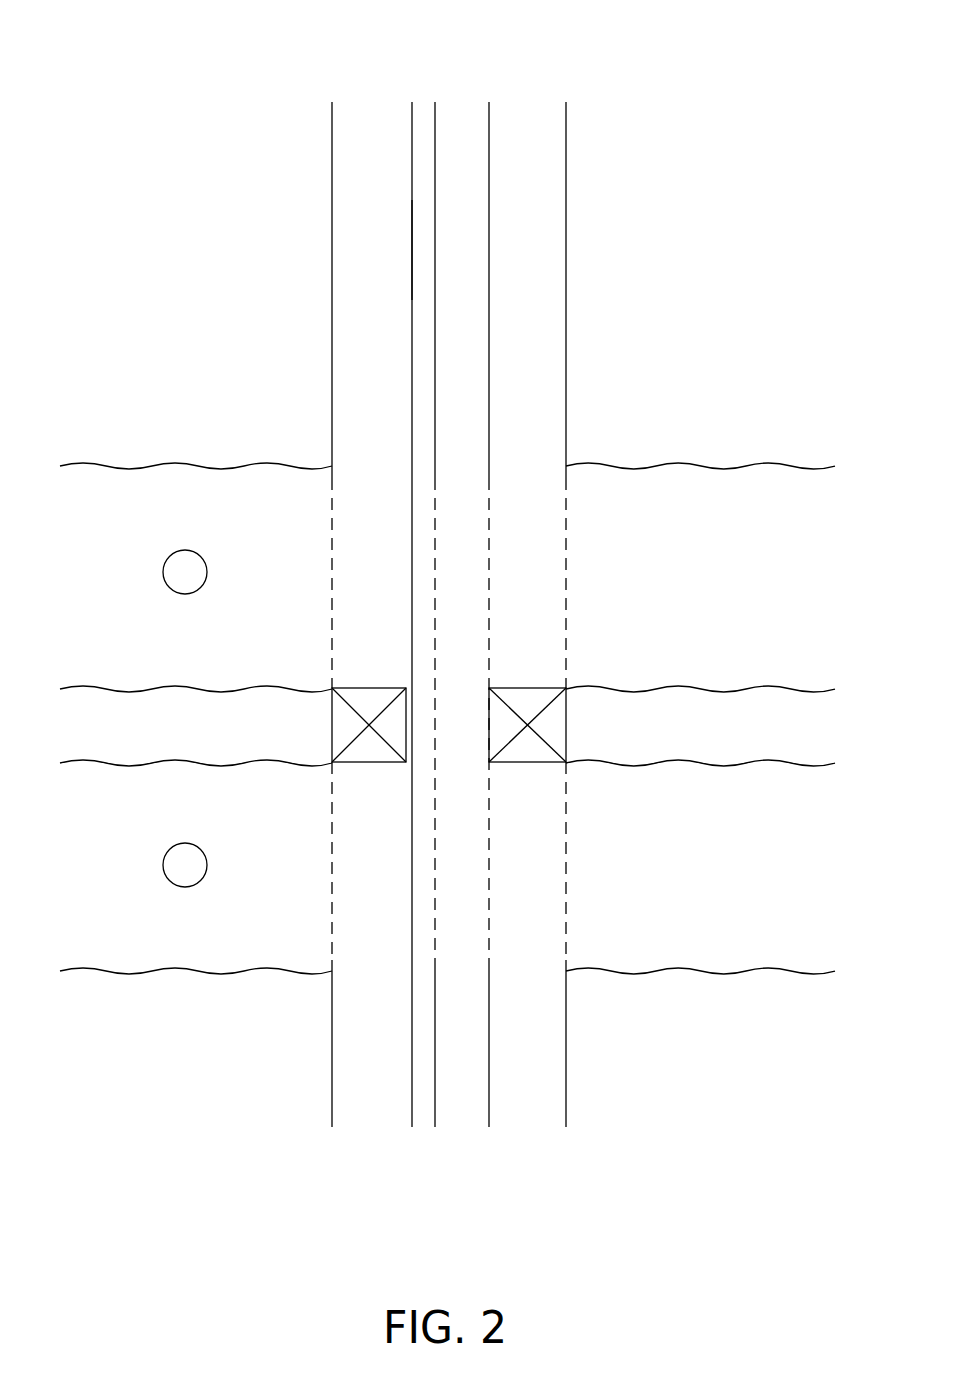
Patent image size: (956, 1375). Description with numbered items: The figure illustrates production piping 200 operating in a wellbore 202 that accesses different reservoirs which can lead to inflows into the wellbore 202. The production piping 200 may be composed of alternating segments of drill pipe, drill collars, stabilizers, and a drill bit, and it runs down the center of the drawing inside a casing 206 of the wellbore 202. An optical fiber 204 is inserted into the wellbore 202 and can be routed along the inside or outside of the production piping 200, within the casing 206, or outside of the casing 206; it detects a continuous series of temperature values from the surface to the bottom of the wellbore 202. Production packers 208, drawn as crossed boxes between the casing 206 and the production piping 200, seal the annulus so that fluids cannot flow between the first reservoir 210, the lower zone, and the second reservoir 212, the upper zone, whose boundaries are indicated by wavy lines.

The production piping 200 is at (460, 118).
The wellbore 202 is at (537, 170).
The optical fiber 204 is at (412, 249).
The casing 206 is at (331, 335).
The production packers 208 is at (357, 762).
The reservoir 1 210 is at (175, 947).
The reservoir 2 212 is at (148, 483).